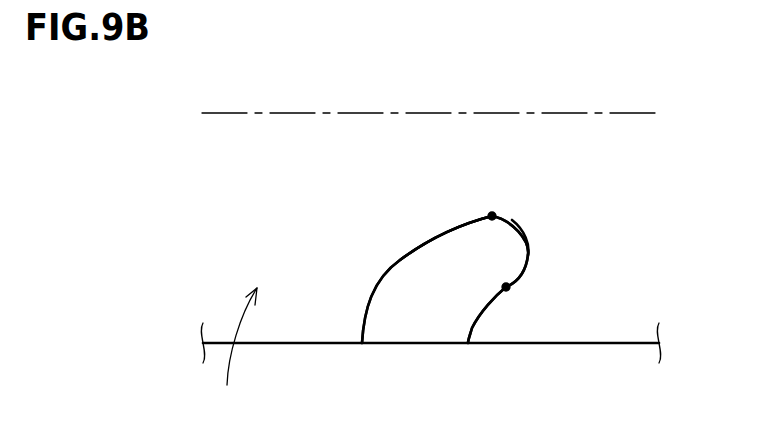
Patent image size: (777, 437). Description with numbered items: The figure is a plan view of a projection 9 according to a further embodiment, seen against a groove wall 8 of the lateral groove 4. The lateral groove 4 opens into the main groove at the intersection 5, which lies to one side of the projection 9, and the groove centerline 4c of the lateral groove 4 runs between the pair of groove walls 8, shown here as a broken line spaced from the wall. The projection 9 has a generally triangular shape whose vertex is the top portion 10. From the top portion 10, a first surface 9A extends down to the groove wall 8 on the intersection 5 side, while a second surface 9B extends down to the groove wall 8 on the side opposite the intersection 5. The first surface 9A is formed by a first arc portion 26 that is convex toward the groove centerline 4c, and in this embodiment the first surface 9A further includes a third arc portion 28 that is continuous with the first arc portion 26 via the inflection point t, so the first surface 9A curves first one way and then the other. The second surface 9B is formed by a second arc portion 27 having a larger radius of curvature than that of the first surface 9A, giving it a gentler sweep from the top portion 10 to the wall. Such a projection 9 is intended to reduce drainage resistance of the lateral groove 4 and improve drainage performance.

The lateral groove 4 is at (237, 352).
The groove centerline 4c is at (630, 113).
The intersection 5 is at (693, 239).
The groove wall 8 is at (638, 343).
The projection 9 is at (435, 305).
The first surface 9A is at (525, 232).
The second surface 9B is at (377, 284).
The top portion 10 is at (492, 215).
The first arc portion 26 is at (530, 255).
The second arc portion 27 is at (440, 232).
The third arc portion 28 is at (478, 317).
The inflection point t is at (506, 287).